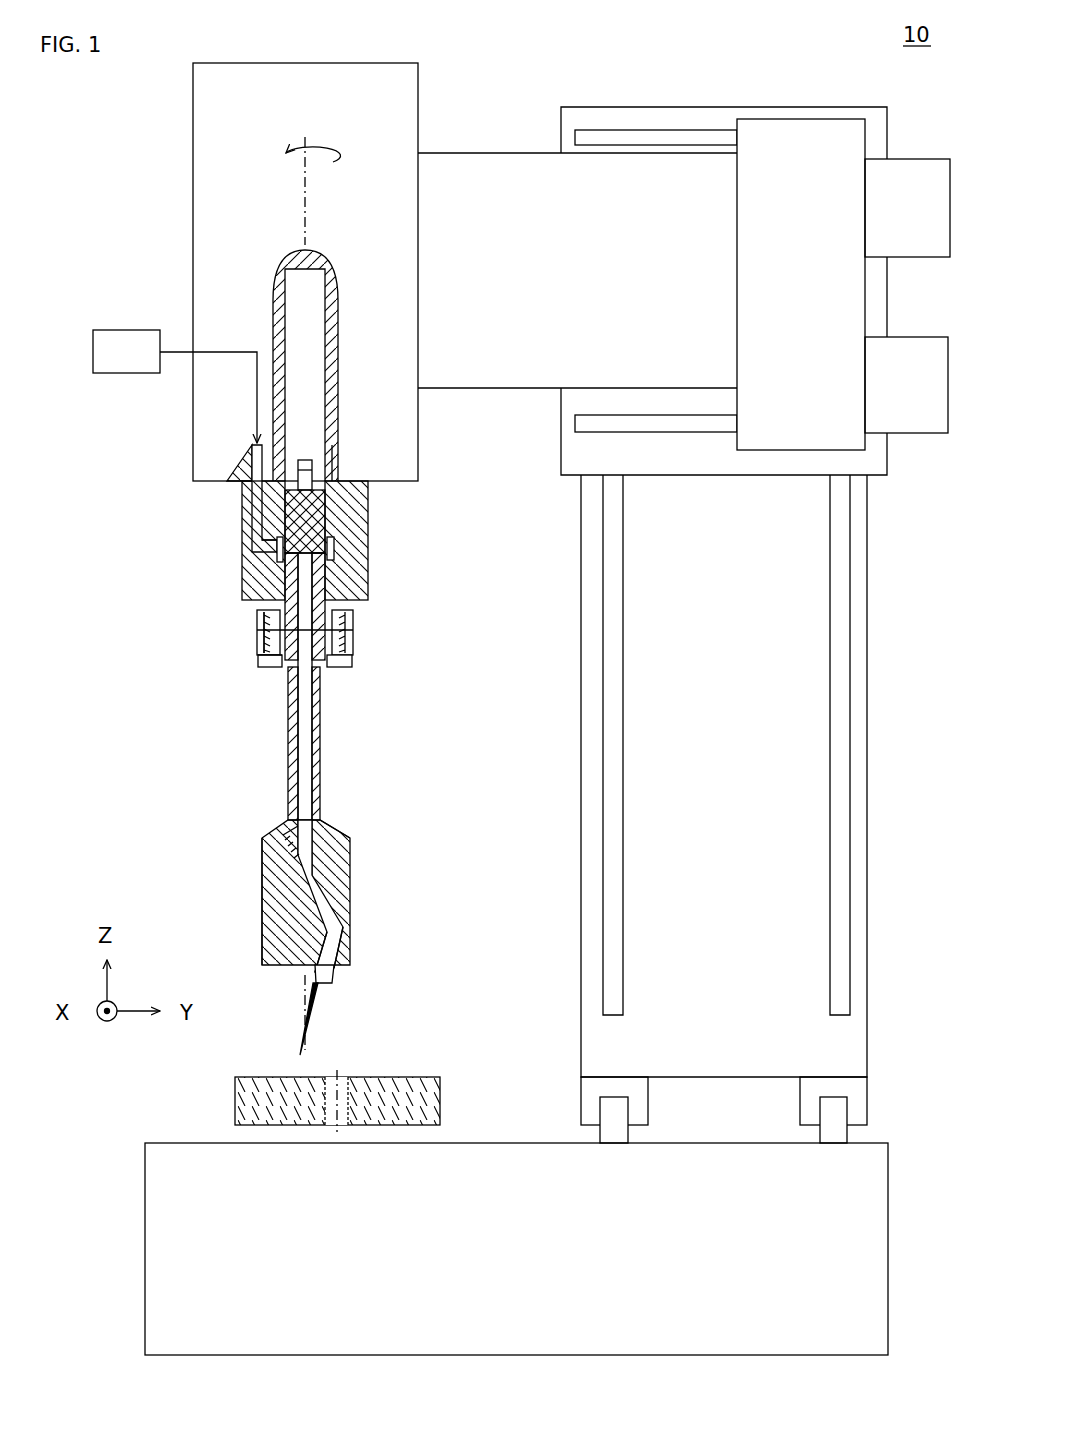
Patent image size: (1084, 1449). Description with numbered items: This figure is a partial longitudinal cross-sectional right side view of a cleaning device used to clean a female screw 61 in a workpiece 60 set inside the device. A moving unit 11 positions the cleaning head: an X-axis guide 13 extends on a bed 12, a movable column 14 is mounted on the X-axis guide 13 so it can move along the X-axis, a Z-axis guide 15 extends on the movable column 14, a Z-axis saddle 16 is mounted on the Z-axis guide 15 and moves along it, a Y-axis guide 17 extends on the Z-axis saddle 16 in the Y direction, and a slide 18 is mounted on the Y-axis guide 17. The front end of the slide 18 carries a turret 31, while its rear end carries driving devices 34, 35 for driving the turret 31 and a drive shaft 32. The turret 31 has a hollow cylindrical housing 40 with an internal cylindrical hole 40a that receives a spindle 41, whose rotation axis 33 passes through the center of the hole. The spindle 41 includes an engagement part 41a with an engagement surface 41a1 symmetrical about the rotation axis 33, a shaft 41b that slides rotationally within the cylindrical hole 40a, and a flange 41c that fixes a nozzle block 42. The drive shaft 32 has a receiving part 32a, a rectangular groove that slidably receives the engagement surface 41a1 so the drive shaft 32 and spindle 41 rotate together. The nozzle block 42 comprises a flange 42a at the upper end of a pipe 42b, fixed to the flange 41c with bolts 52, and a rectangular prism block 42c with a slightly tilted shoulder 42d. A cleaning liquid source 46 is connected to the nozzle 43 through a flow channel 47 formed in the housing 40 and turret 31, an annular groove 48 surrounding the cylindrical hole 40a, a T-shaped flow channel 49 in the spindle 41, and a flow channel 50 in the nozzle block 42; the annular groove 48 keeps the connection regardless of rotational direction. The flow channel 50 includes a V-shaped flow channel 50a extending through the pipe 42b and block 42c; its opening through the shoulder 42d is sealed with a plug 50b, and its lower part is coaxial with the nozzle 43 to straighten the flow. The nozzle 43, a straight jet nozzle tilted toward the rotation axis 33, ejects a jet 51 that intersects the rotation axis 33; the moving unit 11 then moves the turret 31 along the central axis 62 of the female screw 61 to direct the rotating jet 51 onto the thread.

The moving unit 11 is at (640, 88).
The bed 12 is at (888, 1200).
The X-axis guide 13 is at (868, 1100).
The movable column 14 is at (867, 723).
The Z-axis guide 15 is at (625, 545).
The Z-axis saddle 16 is at (760, 475).
The Y-axis guide 17 is at (597, 130).
The slide 18 is at (497, 388).
The turret 31 is at (418, 92).
The drive shaft 32 is at (303, 270).
The receiving part 32a is at (305, 460).
The rotation axis 33 is at (306, 203).
The driving device 34 is at (928, 159).
The driving device 35 is at (917, 337).
The housing 40 is at (242, 537).
The cylindrical hole 40a is at (320, 590).
The spindle 41 is at (358, 622).
The engagement part 41a is at (318, 482).
The engagement surface 41a1 is at (312, 478).
The shaft 41b is at (285, 585).
The flange 41c is at (258, 625).
The nozzle block 42 is at (355, 870).
The flange 42a is at (262, 662).
The pipe 42b is at (288, 765).
The block 42c is at (262, 903).
The shoulder 42d is at (340, 830).
The nozzle 43 is at (333, 975).
The cleaning liquid source 46 is at (110, 330).
The flow channel 47 is at (256, 500).
The annular groove 48 is at (334, 548).
The flow channel 49 is at (340, 516).
The flow channel 50 is at (305, 770).
The V-shaped flow channel 50a is at (340, 930).
The plug 50b is at (280, 835).
The jet 51 is at (303, 1025).
The bolts 52 is at (270, 668).
The workpiece 60 is at (442, 1097).
The female screw 61 is at (340, 1125).
The central axis 62 is at (337, 1095).